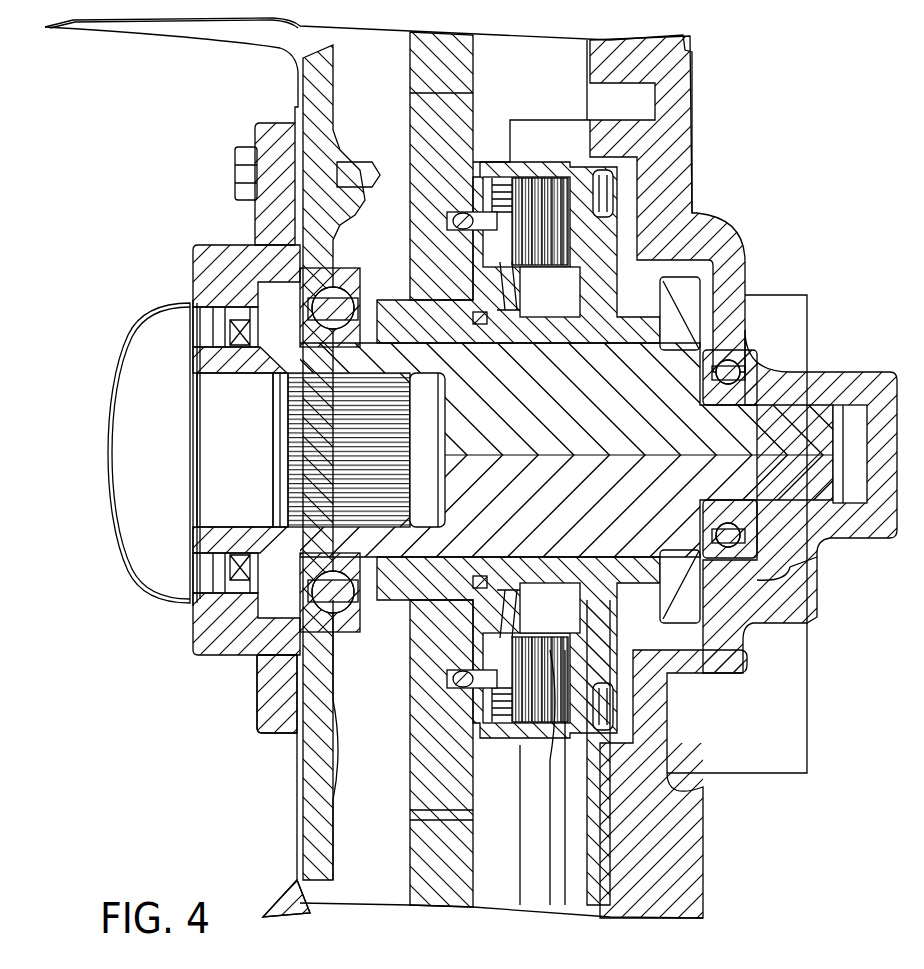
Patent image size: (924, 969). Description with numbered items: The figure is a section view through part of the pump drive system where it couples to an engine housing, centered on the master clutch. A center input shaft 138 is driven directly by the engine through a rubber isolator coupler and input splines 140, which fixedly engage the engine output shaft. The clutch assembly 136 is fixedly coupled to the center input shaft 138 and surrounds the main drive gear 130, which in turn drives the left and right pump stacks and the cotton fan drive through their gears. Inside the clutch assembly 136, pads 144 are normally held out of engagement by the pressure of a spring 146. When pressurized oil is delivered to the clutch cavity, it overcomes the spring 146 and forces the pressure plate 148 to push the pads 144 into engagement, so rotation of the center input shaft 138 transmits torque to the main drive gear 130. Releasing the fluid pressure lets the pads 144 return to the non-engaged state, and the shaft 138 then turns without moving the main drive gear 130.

The main drive gear 130 is at (432, 143).
The clutch assembly 136 is at (600, 158).
The center input shaft 138 is at (683, 363).
The splines 140 is at (267, 480).
The pads 144 is at (560, 248).
The spring 146 is at (512, 262).
The pressure plate 148 is at (497, 217).